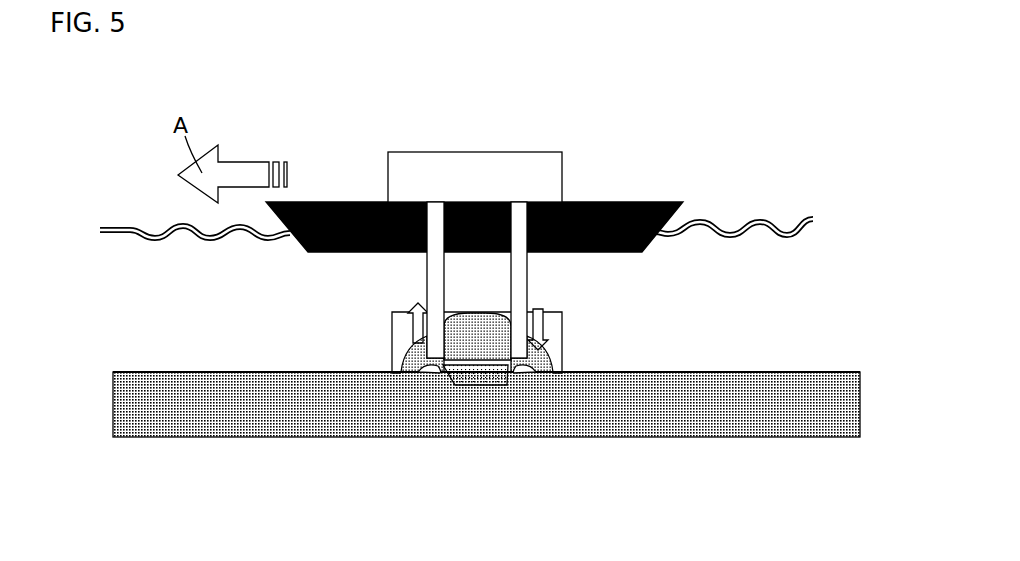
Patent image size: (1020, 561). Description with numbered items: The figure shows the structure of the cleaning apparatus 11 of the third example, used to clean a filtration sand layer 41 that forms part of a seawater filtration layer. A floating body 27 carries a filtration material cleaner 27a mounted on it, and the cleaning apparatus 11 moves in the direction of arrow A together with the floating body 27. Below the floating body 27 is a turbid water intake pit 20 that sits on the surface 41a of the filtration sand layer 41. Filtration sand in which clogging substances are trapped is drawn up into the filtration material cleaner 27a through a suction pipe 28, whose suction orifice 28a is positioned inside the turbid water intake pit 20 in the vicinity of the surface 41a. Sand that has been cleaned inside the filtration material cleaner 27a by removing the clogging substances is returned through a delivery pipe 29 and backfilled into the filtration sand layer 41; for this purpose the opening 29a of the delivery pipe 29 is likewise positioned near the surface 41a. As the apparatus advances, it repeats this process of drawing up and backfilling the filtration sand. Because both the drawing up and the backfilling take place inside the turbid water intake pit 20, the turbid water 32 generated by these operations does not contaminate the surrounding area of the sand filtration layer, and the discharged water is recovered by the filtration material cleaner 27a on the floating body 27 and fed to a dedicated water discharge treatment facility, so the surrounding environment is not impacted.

The cleaning apparatus 11 is at (574, 333).
The turbid water intake pit 20 is at (552, 320).
The floating body 27 is at (612, 188).
The filtration material cleaner 27a is at (478, 160).
The suction pipe 28 is at (427, 273).
The suction orifice 28a is at (415, 372).
The delivery pipe 29 is at (527, 272).
The opening 29a is at (555, 358).
The turbid water 32 is at (478, 318).
The filtration sand layer 41 is at (116, 398).
The surface 41a is at (155, 372).